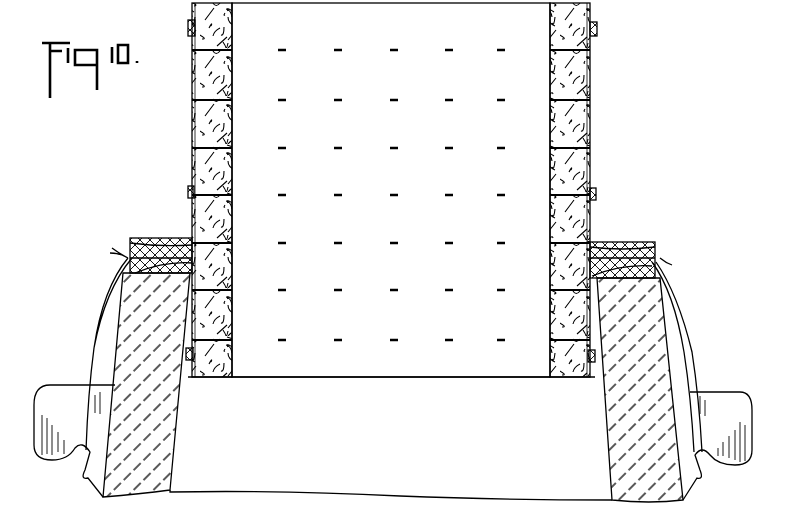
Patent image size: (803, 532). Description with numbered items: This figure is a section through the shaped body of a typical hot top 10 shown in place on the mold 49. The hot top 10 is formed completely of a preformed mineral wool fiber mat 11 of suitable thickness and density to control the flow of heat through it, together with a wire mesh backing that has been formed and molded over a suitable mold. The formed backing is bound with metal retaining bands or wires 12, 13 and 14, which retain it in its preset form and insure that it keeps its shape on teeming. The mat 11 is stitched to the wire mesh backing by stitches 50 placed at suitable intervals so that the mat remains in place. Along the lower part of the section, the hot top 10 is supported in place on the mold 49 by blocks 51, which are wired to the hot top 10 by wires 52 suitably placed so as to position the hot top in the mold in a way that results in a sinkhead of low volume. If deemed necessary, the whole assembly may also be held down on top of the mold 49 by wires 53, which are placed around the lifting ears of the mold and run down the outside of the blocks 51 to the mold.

The hot top 10 is at (451, 29).
The mineral wool fiber mat 11 is at (233, 24).
The metal retaining band 12 is at (188, 30).
The metal retaining band 13 is at (188, 193).
The metal retaining band 14 is at (180, 364).
The mold 49 is at (170, 472).
The stitches 50 is at (192, 118).
The blocks 51 is at (163, 238).
The wires 52 is at (132, 272).
The wires 53 is at (94, 341).